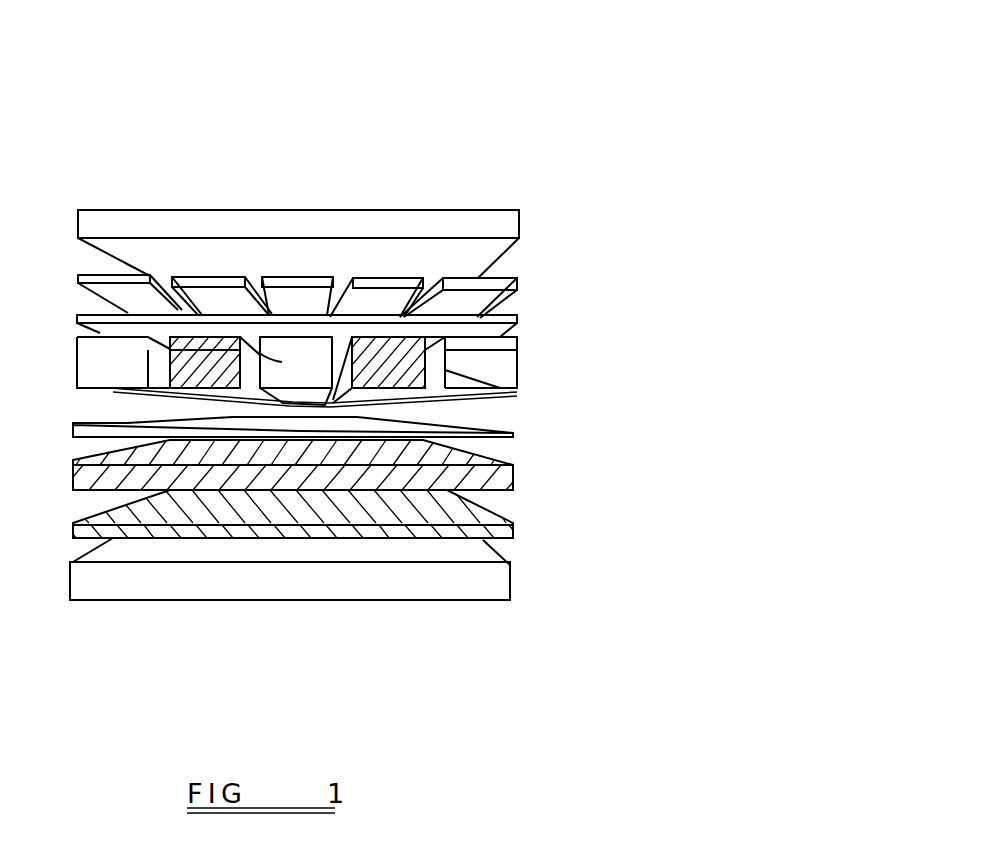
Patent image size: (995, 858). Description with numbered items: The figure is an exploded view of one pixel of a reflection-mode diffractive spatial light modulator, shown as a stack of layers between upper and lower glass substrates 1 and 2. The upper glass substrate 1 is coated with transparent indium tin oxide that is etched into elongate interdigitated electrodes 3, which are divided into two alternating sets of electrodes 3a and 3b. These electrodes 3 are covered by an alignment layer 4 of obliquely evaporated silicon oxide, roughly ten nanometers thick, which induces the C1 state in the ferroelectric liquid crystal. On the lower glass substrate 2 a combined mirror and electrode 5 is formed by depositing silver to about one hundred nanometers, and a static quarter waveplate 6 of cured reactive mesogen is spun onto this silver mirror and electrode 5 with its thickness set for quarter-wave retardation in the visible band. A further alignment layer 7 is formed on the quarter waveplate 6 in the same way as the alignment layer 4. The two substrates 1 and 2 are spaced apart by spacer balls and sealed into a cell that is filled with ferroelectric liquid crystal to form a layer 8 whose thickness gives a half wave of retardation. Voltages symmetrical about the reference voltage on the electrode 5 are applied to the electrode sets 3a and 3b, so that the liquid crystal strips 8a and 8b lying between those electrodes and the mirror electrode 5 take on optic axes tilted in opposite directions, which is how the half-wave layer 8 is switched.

The upper glass substrate 1 is at (118, 214).
The lower glass substrate 2 is at (432, 583).
The elongate interdigitated electrodes 3 is at (480, 277).
The interdigitated electrode 3a is at (350, 277).
The interdigitated electrode 3b is at (262, 272).
The alignment layer 4 is at (517, 330).
The combined mirror and electrode 5 is at (487, 517).
The static quarter waveplate 6 is at (513, 470).
The further alignment layer 7 is at (517, 437).
The ferroelectric liquid crystal layer 8 is at (500, 352).
The ferroelectric liquid crystal material strip 8a is at (445, 370).
The ferroelectric liquid crystal material strip 8b is at (170, 351).